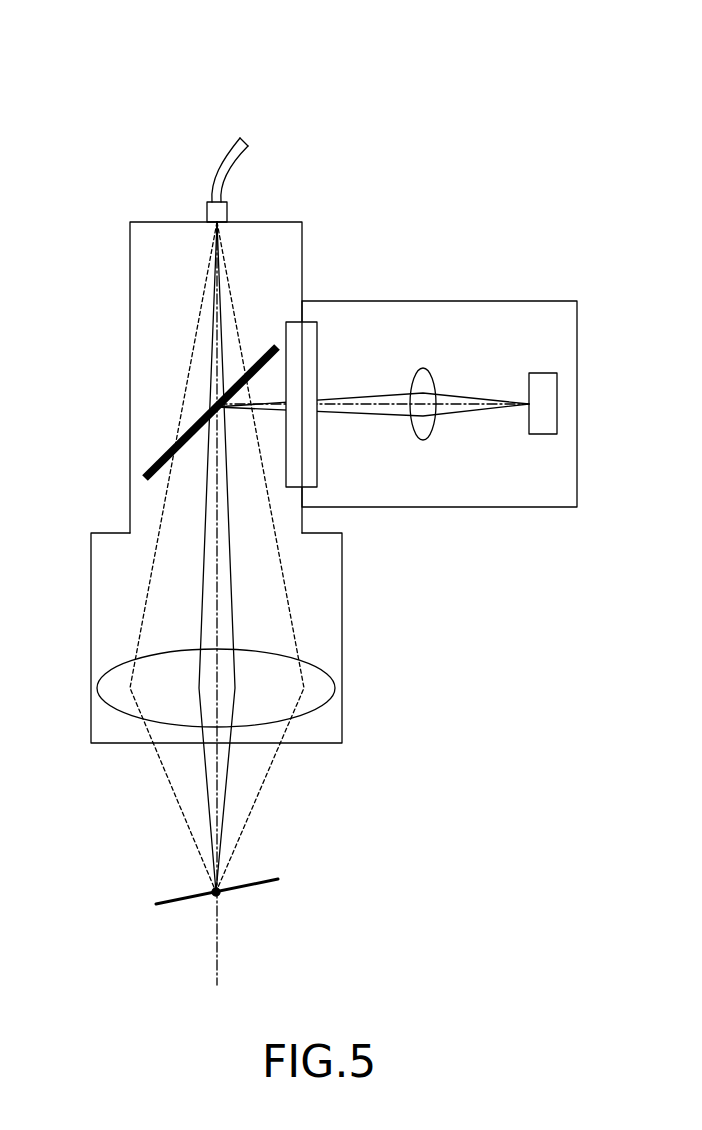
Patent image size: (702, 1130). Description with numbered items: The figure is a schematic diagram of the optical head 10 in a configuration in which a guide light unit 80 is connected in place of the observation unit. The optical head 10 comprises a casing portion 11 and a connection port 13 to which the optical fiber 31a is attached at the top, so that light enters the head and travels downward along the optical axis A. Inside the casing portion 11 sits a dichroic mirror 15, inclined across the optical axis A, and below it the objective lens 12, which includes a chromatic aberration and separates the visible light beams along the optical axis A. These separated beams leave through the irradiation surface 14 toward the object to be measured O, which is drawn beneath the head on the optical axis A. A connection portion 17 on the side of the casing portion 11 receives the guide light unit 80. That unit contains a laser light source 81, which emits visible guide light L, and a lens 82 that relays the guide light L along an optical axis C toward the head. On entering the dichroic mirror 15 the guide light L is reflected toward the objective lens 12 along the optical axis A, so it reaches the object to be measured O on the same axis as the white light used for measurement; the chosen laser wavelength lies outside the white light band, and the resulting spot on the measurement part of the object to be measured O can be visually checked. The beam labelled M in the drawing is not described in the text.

The optical head 10 is at (292, 116).
The casing portion 11 is at (130, 330).
The objective lens 12 is at (335, 686).
The connection port 13 is at (207, 210).
The irradiation surface 14 is at (312, 744).
The dichroic mirror 15 is at (173, 447).
The connection portion 17 is at (318, 488).
The optical fiber 31a is at (226, 160).
The guide light unit 80 is at (505, 301).
The laser light source 81 is at (557, 401).
The lens 82 is at (423, 441).
The optical axis A is at (216, 960).
The optical axis C is at (348, 397).
The guide light L is at (232, 610).
The measurement light (W) M is at (145, 613).
The object to be measured O is at (278, 879).